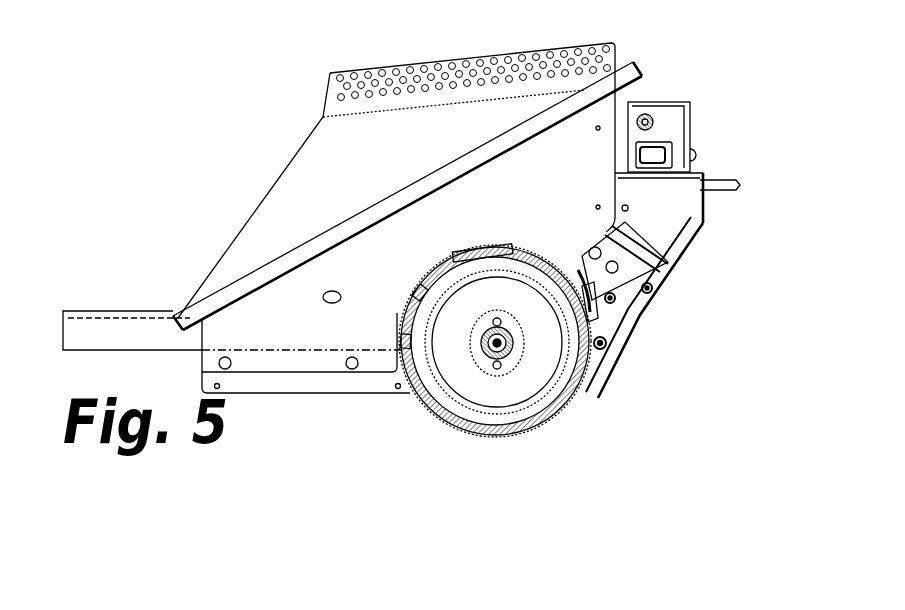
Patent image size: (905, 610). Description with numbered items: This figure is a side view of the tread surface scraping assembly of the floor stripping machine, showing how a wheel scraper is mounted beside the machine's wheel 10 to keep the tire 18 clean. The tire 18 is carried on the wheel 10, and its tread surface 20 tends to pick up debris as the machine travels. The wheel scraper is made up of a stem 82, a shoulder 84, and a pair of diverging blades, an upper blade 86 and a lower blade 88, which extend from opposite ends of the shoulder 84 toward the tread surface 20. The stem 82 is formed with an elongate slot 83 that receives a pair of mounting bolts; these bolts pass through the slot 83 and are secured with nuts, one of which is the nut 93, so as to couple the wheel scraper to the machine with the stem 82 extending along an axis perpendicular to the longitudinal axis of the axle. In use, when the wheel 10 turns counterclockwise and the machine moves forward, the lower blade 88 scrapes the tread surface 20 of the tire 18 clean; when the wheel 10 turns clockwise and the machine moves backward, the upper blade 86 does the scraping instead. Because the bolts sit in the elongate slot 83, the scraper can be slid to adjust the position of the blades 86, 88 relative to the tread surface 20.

The wheel 10 is at (460, 377).
The tire 18 is at (453, 422).
The tread surface 20 is at (530, 427).
The stem 82 is at (652, 288).
The elongate slot 83 is at (638, 285).
The shoulder 84 is at (590, 303).
The upper blade 86 is at (573, 283).
The lower blade 88 is at (594, 333).
The nut 93 is at (615, 299).